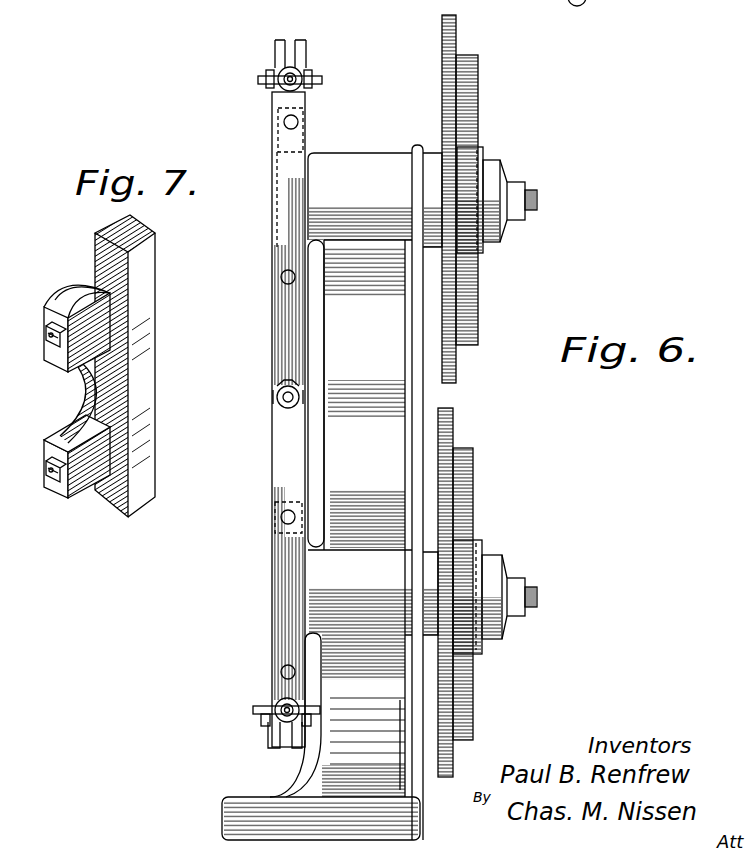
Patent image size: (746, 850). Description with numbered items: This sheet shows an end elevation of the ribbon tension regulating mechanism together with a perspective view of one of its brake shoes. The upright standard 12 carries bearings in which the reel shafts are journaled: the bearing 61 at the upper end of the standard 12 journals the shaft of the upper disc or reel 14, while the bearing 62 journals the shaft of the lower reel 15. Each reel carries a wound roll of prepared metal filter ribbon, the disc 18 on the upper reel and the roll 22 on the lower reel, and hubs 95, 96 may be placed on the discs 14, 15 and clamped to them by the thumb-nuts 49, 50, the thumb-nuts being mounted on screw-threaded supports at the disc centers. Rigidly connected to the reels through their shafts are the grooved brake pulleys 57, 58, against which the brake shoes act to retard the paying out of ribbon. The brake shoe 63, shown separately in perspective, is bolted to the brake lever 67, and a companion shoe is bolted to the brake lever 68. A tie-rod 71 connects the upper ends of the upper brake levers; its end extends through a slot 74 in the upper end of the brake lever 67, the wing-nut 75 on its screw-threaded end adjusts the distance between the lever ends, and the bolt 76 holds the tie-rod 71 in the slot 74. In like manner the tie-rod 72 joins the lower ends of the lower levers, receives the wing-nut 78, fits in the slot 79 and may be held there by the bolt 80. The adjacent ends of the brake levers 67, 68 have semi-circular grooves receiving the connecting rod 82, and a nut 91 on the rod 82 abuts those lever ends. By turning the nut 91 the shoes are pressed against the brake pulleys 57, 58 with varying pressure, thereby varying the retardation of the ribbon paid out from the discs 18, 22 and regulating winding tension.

In FIG. 6, the standard 12 is at (322, 492).
In FIG. 6, the reel 14 is at (454, 37).
In FIG. 6, the reel 15 is at (447, 432).
In FIG. 6, the disc of prepared metal filter ribbon 18 is at (468, 110).
In FIG. 6, the roll of wound prepared metal filter ribbon 22 is at (466, 490).
In FIG. 6, the thumb-nut 49 is at (512, 196).
In FIG. 6, the thumb-nut 50 is at (510, 590).
In FIG. 6, the brake pulley 57 is at (276, 205).
In FIG. 6, the brake pulley 58 is at (280, 598).
In FIG. 6, the bearing 61 is at (360, 179).
In FIG. 6, the bearing 62 is at (354, 673).
In FIG. 7, the brake shoe 63 is at (78, 379).
In FIG. 6, the brake lever 67 is at (280, 103).
In FIG. 7, the brake lever 67 is at (146, 340).
In FIG. 6, the brake lever 68 is at (275, 673).
In FIG. 6, the tie-rod 71 is at (298, 73).
In FIG. 6, the tie-rod 72 is at (272, 722).
In FIG. 6, the slot 74 is at (290, 48).
In FIG. 6, the wing-nut 75 is at (266, 82).
In FIG. 6, the bolt 76 is at (315, 76).
In FIG. 6, the wing-nut 78 is at (275, 703).
In FIG. 6, the slot 79 is at (286, 747).
In FIG. 6, the bolt 80 is at (310, 725).
In FIG. 6, the connecting rod 82 is at (279, 403).
In FIG. 6, the nut 91 is at (282, 389).
In FIG. 6, the hub 95 is at (468, 156).
In FIG. 6, the hub 96 is at (466, 548).